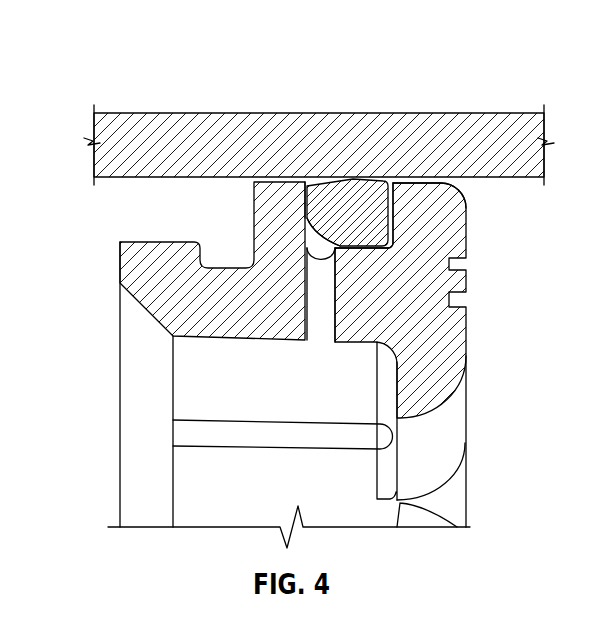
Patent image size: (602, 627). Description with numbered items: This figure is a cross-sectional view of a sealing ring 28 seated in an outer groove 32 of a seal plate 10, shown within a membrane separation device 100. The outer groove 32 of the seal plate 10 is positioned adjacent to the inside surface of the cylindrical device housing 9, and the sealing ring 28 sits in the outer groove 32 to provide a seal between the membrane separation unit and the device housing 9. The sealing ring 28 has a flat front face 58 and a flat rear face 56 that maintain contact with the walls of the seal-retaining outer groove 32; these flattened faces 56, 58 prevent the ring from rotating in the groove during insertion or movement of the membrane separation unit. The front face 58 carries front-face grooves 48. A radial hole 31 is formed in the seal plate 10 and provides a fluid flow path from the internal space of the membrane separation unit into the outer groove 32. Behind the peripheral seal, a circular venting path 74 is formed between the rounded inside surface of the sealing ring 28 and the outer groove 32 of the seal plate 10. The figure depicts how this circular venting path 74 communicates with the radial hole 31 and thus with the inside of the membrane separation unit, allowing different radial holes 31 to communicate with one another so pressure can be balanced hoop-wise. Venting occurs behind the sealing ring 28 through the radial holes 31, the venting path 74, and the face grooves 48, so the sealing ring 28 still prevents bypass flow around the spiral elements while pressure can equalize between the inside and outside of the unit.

The membrane separation device 100 is at (137, 52).
The device housing 9 is at (352, 126).
The seal plate 10 is at (68, 354).
The sealing ring 28 is at (355, 194).
The front-face grooves 48 is at (392, 192).
The rear face 56 is at (310, 211).
The front face 58 is at (393, 197).
The outer groove 32 is at (393, 232).
The circular venting path 74 is at (314, 242).
The radial holes 31 is at (325, 273).